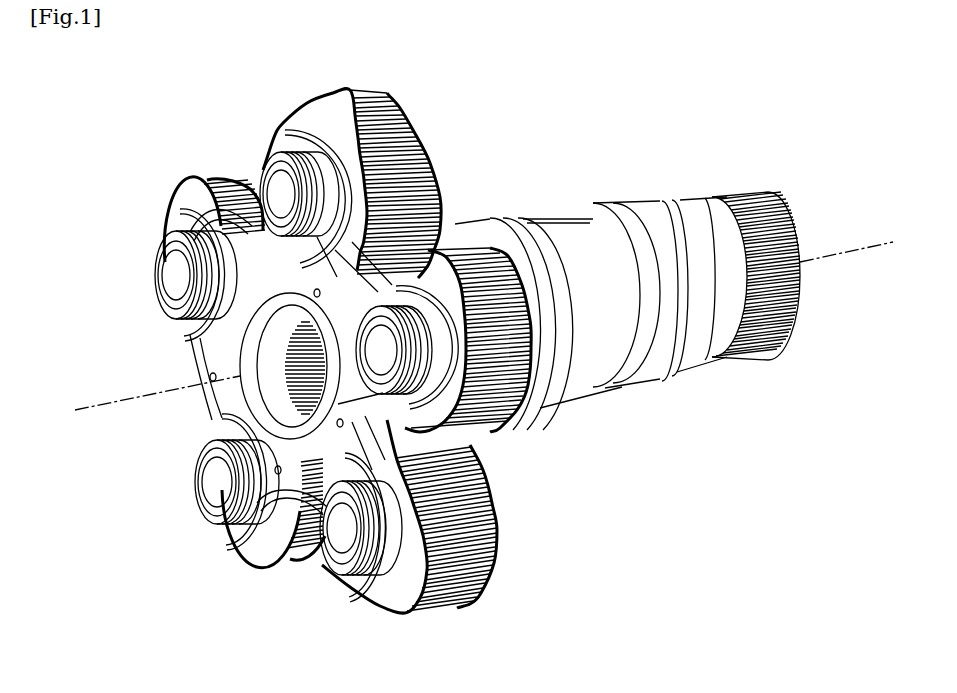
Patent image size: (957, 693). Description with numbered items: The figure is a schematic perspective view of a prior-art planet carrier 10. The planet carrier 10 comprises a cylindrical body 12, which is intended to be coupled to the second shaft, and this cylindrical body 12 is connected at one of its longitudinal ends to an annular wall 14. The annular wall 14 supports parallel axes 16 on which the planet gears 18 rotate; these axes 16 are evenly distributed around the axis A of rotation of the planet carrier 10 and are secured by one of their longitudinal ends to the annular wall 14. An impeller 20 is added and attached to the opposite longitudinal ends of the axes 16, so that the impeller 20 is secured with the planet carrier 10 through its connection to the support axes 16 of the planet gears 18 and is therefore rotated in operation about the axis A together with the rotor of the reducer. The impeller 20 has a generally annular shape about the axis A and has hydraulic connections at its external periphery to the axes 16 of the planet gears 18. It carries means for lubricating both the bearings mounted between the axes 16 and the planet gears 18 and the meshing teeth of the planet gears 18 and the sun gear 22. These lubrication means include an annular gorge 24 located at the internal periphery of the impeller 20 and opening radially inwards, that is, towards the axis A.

The planet carrier 10 is at (597, 153).
The cylindrical body 12 is at (631, 403).
The annular wall 14 is at (506, 495).
The axes 16 is at (240, 158).
The planet gears 18 is at (410, 123).
The impeller 20 is at (246, 323).
The sun gear 22 is at (280, 366).
The annular gorge 24 is at (250, 393).
The axis of rotation A is at (822, 262).